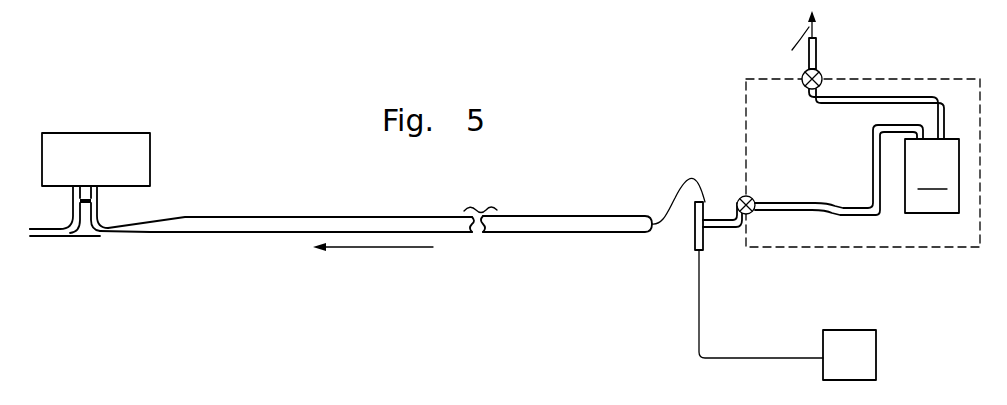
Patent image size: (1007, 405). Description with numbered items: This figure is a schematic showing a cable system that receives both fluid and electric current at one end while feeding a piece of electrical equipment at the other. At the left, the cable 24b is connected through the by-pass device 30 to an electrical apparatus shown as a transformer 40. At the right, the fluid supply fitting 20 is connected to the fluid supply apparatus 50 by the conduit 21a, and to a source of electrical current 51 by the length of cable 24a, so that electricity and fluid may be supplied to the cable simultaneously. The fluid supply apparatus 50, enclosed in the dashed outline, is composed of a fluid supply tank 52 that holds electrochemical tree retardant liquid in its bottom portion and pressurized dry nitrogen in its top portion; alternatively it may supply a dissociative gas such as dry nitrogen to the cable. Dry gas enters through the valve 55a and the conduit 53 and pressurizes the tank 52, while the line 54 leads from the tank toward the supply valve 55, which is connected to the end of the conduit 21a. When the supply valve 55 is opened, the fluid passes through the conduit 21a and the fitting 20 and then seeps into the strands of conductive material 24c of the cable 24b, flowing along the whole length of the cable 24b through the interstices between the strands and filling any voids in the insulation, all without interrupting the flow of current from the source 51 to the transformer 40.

The transformer 40 is at (122, 133).
The by-pass device 30 is at (100, 201).
The strands of conductive material 24c is at (66, 237).
The cable 24b is at (282, 191).
The fluid supply fitting 20 is at (695, 238).
The conduit 21a is at (737, 229).
The length of cable 24a is at (696, 350).
The source of electrical current 51 is at (865, 355).
The fluid supply apparatus 50 is at (893, 82).
The supply valve 55 is at (756, 212).
The pipe 54 is at (872, 136).
The fluid supply tank 52 is at (932, 176).
The conduit 53 is at (855, 107).
The valve 55a is at (822, 76).